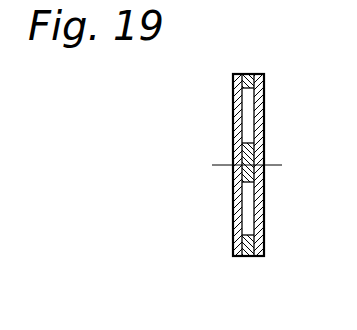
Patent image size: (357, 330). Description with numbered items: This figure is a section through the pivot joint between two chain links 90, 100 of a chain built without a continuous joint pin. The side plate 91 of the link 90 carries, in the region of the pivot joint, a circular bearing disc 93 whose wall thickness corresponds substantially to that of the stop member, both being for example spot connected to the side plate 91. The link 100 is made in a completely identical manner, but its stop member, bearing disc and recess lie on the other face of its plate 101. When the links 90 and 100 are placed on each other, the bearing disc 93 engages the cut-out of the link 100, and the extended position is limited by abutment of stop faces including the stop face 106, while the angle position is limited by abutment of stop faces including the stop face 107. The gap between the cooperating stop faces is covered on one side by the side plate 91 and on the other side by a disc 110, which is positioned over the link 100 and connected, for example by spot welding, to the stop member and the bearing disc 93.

The chain link 90 is at (262, 170).
The side plate 91 is at (238, 121).
The bearing disc 93 is at (238, 178).
The chain link 100 is at (250, 73).
The plate 101 is at (262, 89).
The stop face 106 is at (264, 139).
The stop face 107 is at (247, 213).
The disc 110 is at (258, 259).